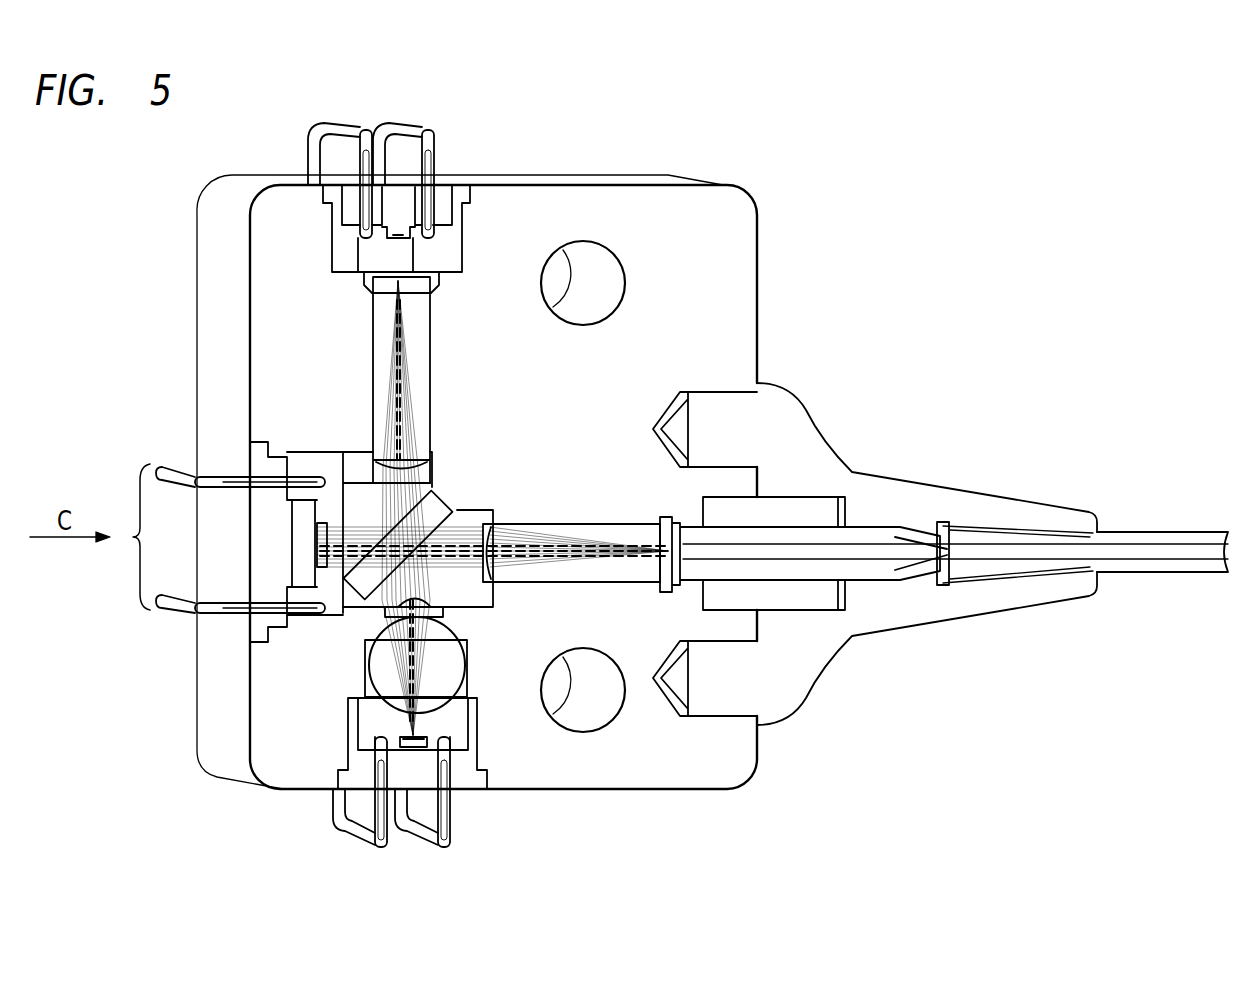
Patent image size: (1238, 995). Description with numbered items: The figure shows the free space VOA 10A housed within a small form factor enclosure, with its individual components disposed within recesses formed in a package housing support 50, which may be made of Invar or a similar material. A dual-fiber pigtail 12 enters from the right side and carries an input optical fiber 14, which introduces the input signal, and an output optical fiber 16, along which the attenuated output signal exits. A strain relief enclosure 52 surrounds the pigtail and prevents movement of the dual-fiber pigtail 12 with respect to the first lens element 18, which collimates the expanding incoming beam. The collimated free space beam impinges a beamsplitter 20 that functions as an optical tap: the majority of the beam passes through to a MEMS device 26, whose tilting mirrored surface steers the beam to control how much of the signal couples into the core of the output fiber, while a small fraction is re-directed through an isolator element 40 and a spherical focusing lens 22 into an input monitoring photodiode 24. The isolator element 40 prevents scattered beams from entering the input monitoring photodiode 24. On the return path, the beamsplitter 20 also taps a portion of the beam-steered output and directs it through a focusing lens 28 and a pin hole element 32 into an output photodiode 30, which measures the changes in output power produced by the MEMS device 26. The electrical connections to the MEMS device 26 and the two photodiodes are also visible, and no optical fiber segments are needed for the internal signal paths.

The free space VOA 10A is at (172, 250).
The package housing support 50 is at (738, 244).
The strain relief enclosure 52 is at (793, 435).
The dual-fiber pigtail 12 is at (873, 535).
The output optical fiber 16 is at (1163, 543).
The input optical fiber 14 is at (1163, 563).
The first lens element 18 is at (622, 533).
The beamsplitter 20 is at (432, 510).
The focusing lens 28 is at (420, 367).
The pin hole element 32 is at (438, 287).
The output photodiode 30 is at (399, 236).
The isolator element 40 is at (447, 616).
The focusing lens 22 is at (375, 667).
The input monitoring photodiode 24 is at (412, 740).
The MEMS device 26 is at (303, 568).